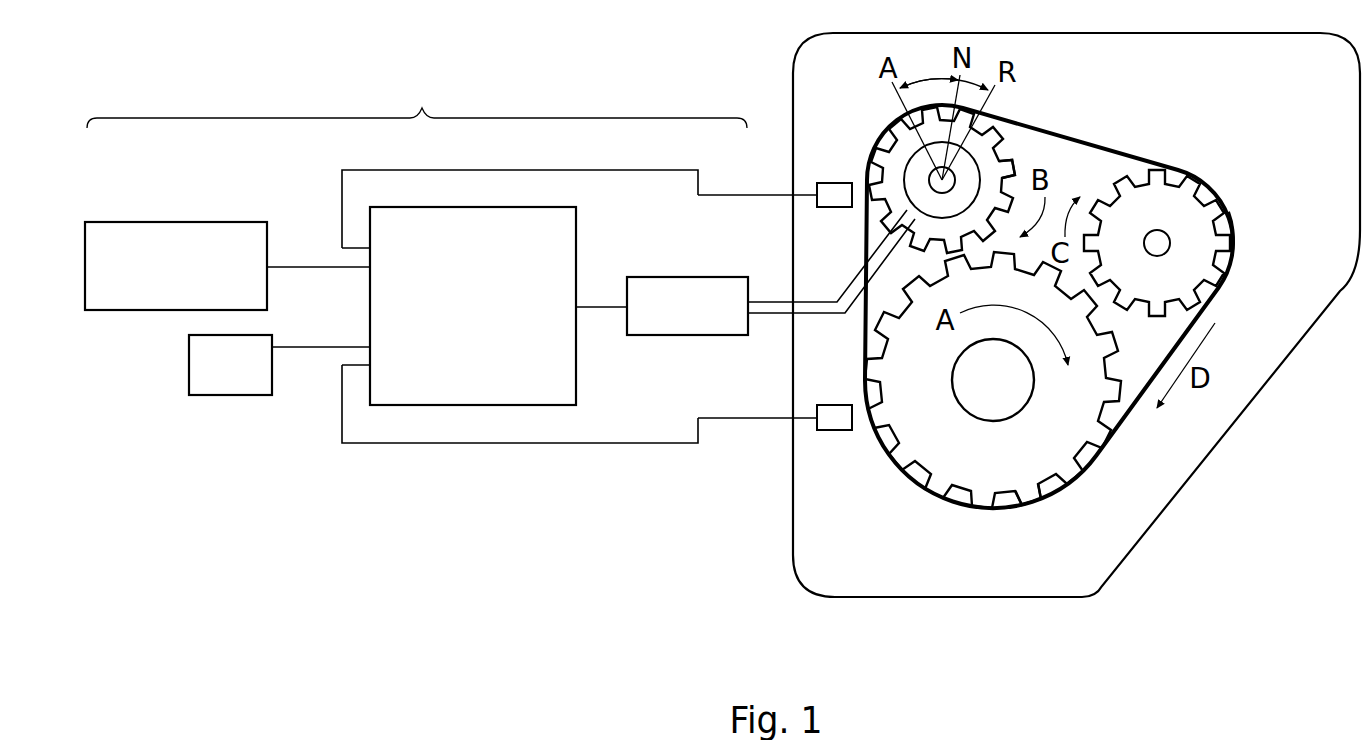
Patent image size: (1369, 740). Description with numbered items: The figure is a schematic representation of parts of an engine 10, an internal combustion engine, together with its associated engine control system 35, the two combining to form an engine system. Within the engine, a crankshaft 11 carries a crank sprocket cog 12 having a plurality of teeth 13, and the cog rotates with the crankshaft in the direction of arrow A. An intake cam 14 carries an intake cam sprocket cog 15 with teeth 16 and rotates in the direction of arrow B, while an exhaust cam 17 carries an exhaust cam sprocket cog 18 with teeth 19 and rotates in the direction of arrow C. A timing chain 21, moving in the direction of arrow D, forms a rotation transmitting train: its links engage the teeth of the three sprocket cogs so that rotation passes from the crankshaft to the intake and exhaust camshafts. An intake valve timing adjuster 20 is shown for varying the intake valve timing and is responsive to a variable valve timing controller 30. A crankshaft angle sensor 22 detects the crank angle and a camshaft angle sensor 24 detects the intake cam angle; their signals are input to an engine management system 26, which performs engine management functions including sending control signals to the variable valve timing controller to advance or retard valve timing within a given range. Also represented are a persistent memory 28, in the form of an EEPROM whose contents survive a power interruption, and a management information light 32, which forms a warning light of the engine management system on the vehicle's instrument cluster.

The engine 10 is at (1175, 493).
The crankshaft 11 is at (993, 393).
The crank sprocket cog 12 is at (1092, 448).
The teeth 13 is at (1027, 497).
The intake cam 14 is at (903, 170).
The intake cam sprocket cog 15 is at (983, 153).
The teeth 16 is at (1000, 162).
The exhaust cam 17 is at (1170, 245).
The exhaust cam sprocket cog 18 is at (1157, 207).
The teeth 19 is at (1237, 227).
The intake valve timing adjuster 20 is at (927, 180).
The timing chain 21 is at (1107, 148).
The crankshaft angle sensor 22 is at (835, 432).
The camshaft angle sensor 24 is at (835, 208).
The engine management system 26 is at (578, 353).
The persistent memory 28 is at (170, 222).
The variable valve timing controller 30 is at (685, 277).
The management information light 32 is at (228, 397).
The engine control system 35 is at (417, 100).